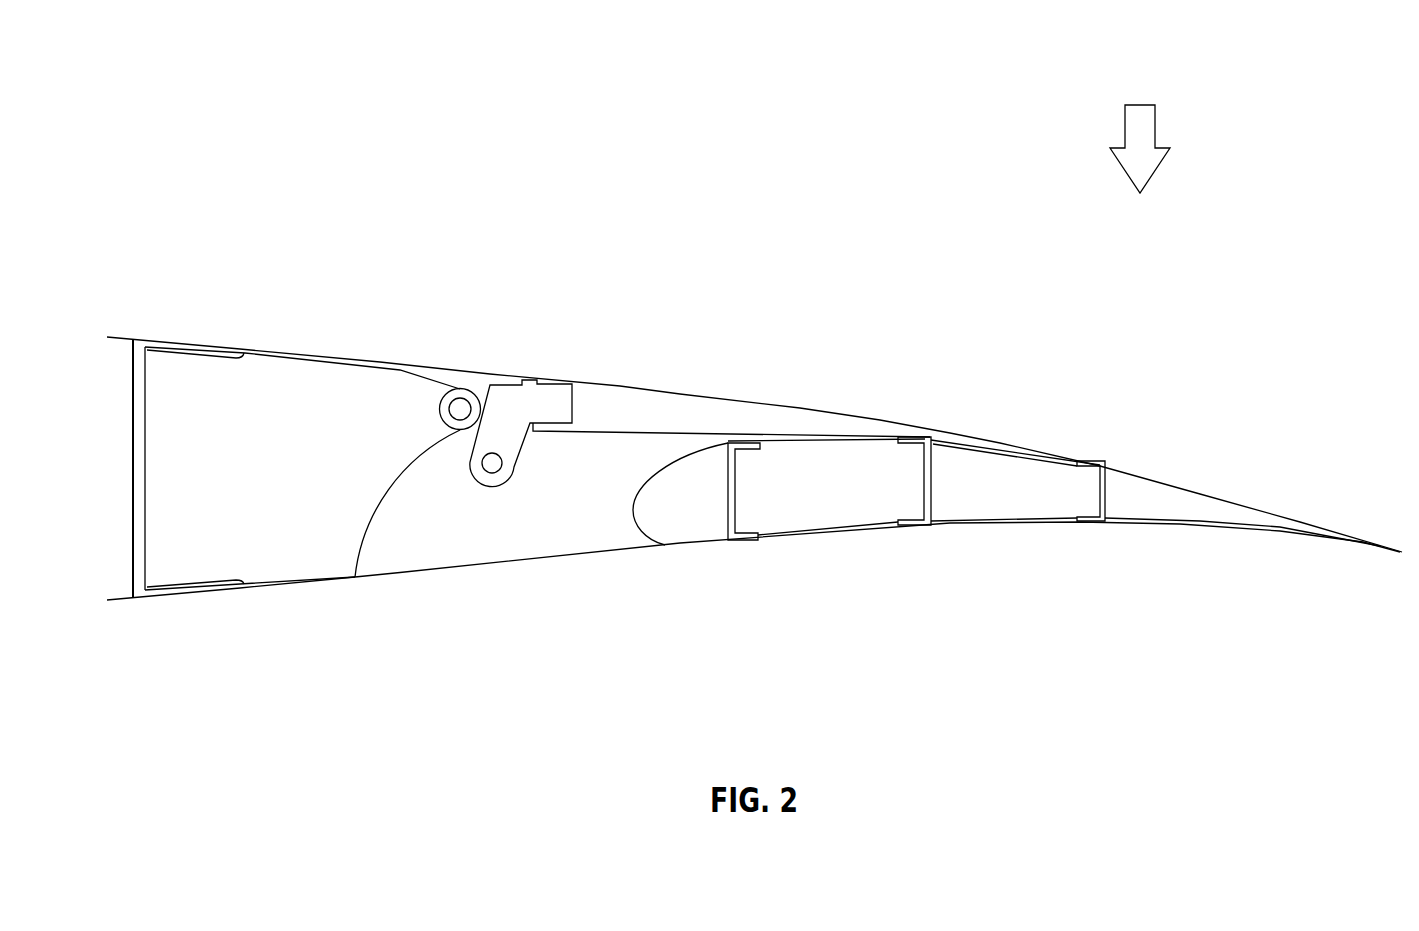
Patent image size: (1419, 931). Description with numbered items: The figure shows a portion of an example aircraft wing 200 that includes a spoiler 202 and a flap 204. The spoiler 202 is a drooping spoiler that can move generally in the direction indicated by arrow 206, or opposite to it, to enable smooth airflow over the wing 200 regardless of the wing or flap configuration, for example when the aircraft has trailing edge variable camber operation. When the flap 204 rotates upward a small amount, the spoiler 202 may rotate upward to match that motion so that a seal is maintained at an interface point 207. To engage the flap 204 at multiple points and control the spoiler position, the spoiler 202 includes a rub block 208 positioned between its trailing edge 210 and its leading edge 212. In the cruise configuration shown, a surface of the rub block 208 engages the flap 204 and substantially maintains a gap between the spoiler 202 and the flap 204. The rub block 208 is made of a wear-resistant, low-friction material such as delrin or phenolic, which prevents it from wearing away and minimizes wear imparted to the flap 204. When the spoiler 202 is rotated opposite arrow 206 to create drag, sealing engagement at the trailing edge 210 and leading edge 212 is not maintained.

The aircraft wing 200 is at (754, 330).
The spoiler 202 is at (706, 410).
The flap 204 is at (1142, 487).
The arrow 206 is at (1150, 104).
The interface point 207 is at (962, 477).
The rub block 208 is at (903, 438).
The trailing edge 210 is at (990, 445).
The leading edge 212 is at (490, 384).